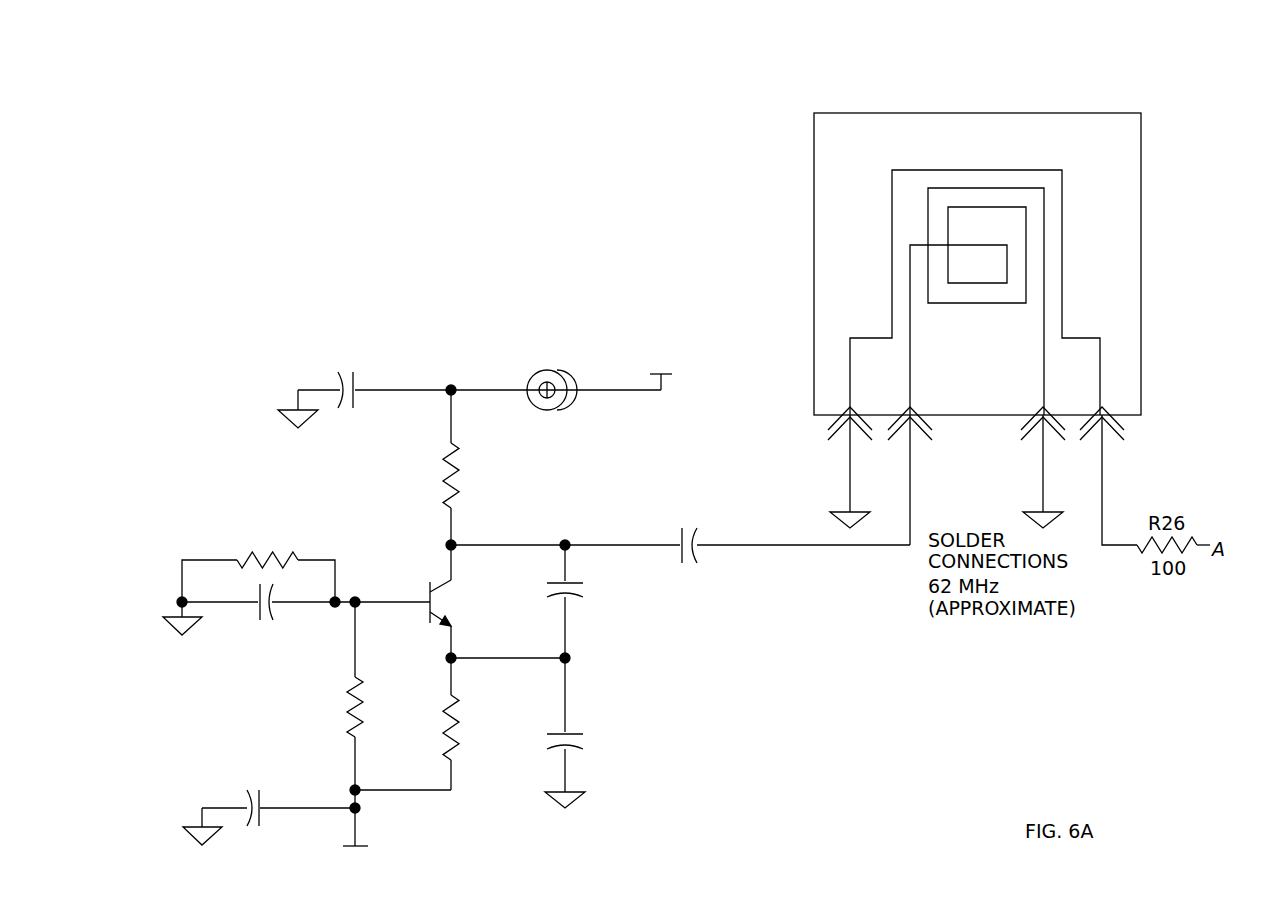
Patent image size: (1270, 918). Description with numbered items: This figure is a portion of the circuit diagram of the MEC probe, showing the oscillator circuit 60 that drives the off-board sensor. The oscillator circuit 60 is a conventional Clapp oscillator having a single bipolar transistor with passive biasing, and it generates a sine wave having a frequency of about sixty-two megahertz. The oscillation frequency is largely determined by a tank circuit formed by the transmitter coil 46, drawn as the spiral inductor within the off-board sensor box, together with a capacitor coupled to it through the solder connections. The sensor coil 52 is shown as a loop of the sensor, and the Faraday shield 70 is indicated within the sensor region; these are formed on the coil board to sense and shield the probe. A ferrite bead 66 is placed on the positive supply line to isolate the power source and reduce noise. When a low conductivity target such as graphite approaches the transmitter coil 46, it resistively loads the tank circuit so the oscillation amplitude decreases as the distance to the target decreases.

The transmitter coil 46 is at (918, 245).
The sensor coil 52 is at (1062, 170).
The oscillator circuit 60 is at (657, 258).
The ferrite bead 66 is at (533, 377).
The Faraday shield 70 is at (1080, 314).